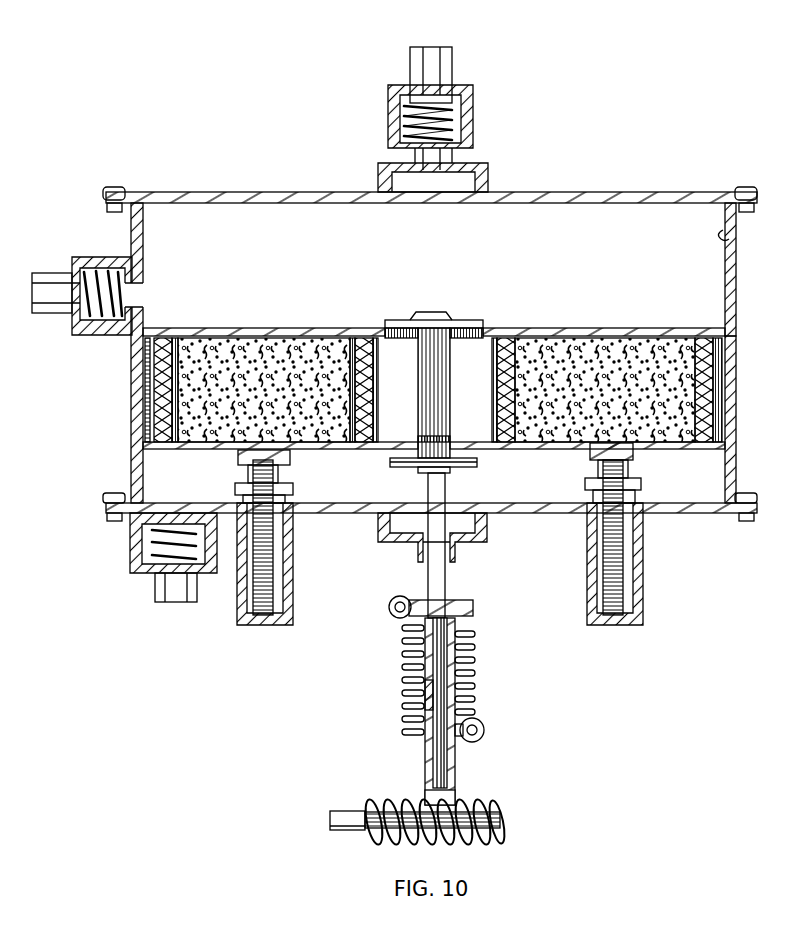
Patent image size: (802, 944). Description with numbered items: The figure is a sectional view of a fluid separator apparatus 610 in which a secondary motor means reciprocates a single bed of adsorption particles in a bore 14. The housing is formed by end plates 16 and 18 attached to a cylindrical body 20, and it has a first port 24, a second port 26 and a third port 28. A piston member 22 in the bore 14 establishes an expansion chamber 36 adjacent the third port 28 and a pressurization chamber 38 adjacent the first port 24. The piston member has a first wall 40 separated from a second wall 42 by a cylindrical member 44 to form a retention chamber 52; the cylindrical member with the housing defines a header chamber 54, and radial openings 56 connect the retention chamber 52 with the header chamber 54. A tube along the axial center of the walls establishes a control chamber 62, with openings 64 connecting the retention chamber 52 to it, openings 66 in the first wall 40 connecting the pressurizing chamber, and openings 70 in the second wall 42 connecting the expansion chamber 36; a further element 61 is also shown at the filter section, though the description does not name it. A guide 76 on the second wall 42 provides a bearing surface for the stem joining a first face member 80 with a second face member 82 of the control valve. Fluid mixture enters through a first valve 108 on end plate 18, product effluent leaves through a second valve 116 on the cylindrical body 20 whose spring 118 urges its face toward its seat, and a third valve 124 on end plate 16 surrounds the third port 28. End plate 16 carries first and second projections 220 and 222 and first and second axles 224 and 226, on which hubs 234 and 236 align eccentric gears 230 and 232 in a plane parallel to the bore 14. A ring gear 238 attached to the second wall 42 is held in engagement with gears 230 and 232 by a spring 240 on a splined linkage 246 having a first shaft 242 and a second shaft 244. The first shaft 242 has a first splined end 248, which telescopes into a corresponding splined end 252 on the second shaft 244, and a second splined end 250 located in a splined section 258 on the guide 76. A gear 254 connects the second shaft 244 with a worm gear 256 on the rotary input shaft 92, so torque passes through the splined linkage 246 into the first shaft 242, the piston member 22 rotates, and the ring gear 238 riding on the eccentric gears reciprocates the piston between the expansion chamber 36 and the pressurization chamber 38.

The bore 14 is at (734, 233).
The end plate 16 is at (722, 513).
The end plate 18 is at (574, 192).
The cylindrical body 20 is at (738, 264).
The piston member 22 is at (583, 292).
The first port 24 is at (444, 182).
The second port 26 is at (143, 285).
The third port 28 is at (178, 512).
The expansion chamber 36 is at (482, 499).
The pressurization chamber 38 is at (259, 274).
The first wall 40 is at (605, 335).
The second wall 42 is at (574, 452).
The cylindrical member 44 is at (717, 346).
The retention chamber 52 is at (645, 346).
The header chamber 54 is at (737, 362).
The radial openings 56 is at (737, 420).
The screen 61 is at (525, 334).
The control chamber 62 is at (462, 422).
The openings 64 is at (493, 330).
The openings 66 is at (377, 333).
The openings 70 is at (392, 450).
The guide 76 is at (417, 430).
The first face member 80 is at (391, 320).
The second face member 82 is at (398, 467).
The rotary input shaft 92 is at (345, 812).
The first valve 108 is at (458, 93).
The second valve 116 is at (86, 262).
The spring 118 is at (104, 276).
The third valve 124 is at (205, 565).
The first projection 220 is at (643, 624).
The second projection 222 is at (270, 628).
The first axle 224 is at (652, 491).
The second axle 226 is at (298, 496).
The eccentric gear 230 is at (624, 579).
The eccentric gear 232 is at (273, 576).
The hub 234 is at (625, 479).
The hub 236 is at (246, 488).
The ring gear 238 is at (236, 456).
The spring 240 is at (473, 638).
The first shaft 242 is at (447, 583).
The second shaft 244 is at (456, 764).
The splined linkage 246 is at (516, 690).
The first splined end 248 is at (437, 660).
The second splined end 250 is at (430, 368).
The splined end 252 is at (430, 692).
The gear 254 is at (503, 820).
The worm gear 256 is at (505, 838).
The splined section 258 is at (450, 358).
The separator apparatus 610 is at (172, 685).